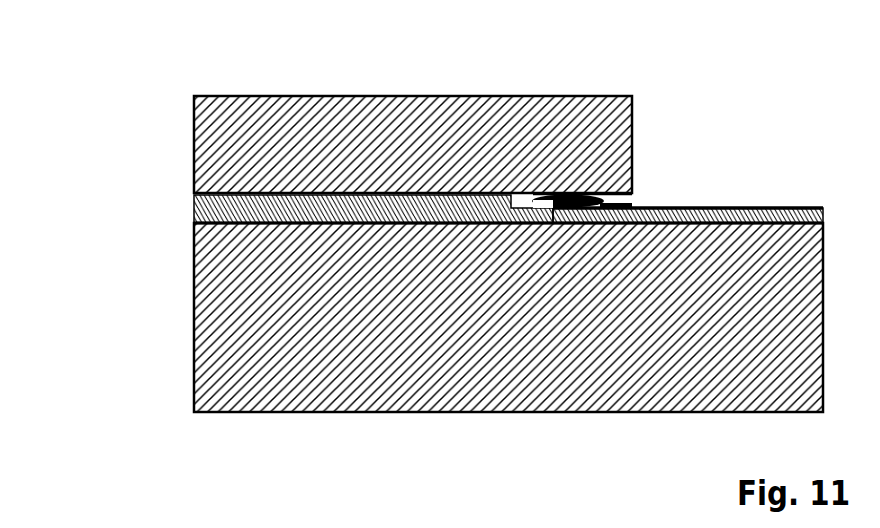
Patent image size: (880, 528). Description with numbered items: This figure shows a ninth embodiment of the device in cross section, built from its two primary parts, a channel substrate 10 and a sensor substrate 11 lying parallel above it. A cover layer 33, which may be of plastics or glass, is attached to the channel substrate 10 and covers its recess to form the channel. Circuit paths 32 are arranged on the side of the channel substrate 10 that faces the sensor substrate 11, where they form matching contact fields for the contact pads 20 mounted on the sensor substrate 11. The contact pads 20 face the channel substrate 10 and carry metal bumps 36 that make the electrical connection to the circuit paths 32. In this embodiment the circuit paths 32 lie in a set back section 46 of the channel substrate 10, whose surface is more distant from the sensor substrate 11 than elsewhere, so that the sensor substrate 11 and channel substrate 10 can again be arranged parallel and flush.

The channel substrate 10 is at (508, 338).
The sensor substrate 11 is at (391, 144).
The contact pads 20 is at (537, 128).
The circuit paths 32 is at (688, 168).
The cover layer 33 is at (292, 223).
The metal bumps 36 is at (603, 199).
The set back section 46 is at (741, 190).